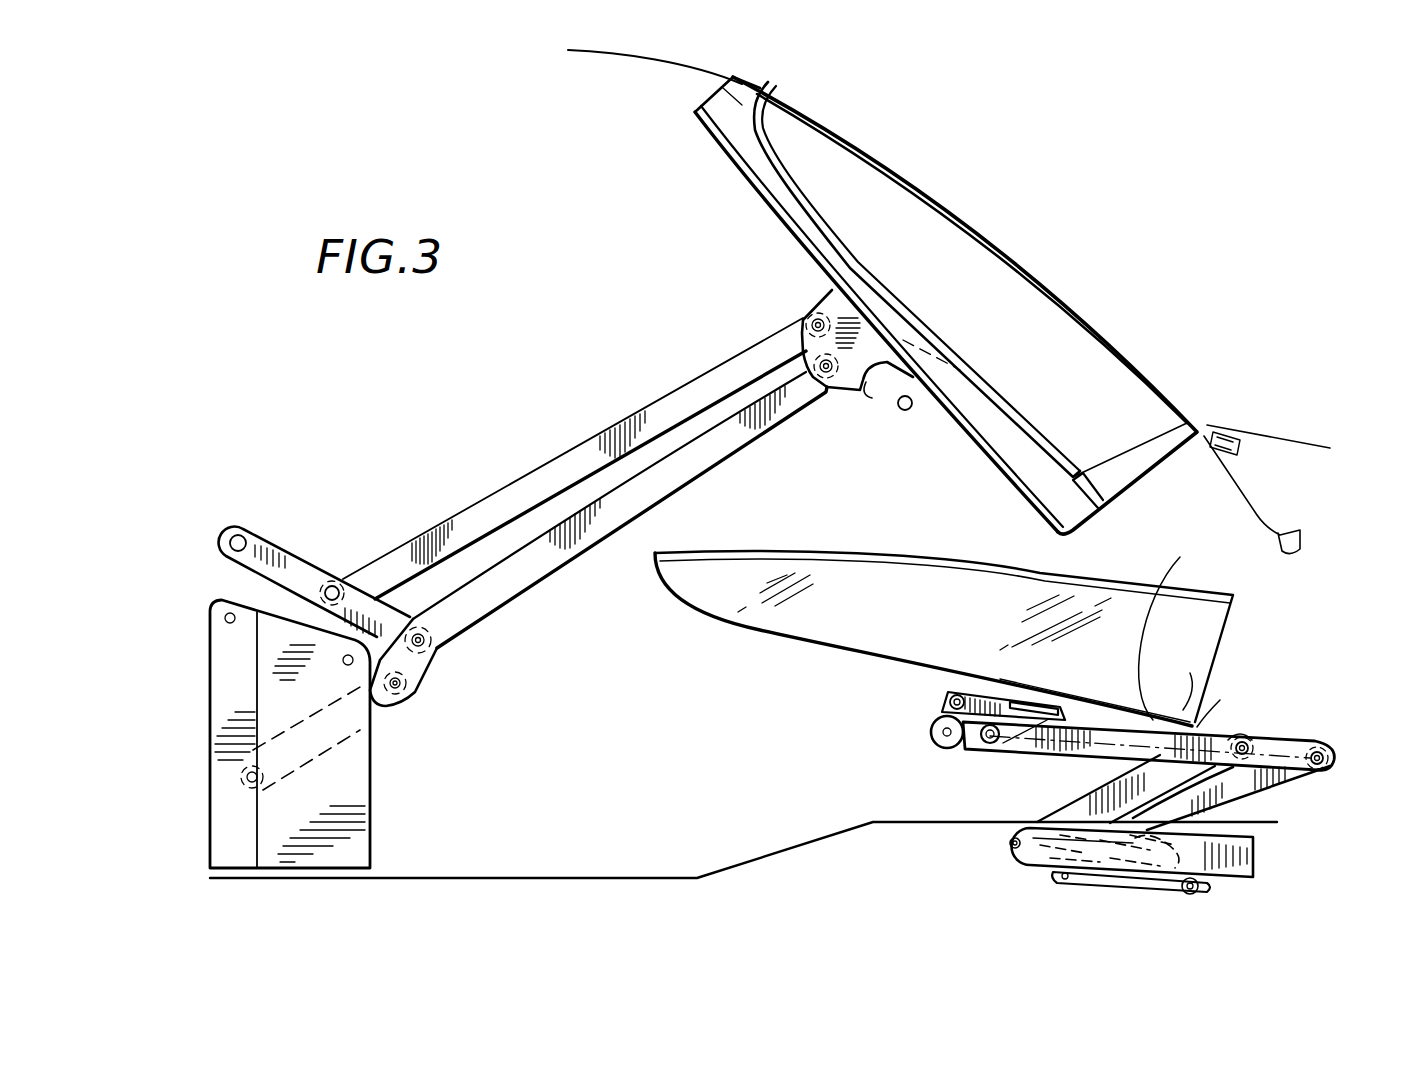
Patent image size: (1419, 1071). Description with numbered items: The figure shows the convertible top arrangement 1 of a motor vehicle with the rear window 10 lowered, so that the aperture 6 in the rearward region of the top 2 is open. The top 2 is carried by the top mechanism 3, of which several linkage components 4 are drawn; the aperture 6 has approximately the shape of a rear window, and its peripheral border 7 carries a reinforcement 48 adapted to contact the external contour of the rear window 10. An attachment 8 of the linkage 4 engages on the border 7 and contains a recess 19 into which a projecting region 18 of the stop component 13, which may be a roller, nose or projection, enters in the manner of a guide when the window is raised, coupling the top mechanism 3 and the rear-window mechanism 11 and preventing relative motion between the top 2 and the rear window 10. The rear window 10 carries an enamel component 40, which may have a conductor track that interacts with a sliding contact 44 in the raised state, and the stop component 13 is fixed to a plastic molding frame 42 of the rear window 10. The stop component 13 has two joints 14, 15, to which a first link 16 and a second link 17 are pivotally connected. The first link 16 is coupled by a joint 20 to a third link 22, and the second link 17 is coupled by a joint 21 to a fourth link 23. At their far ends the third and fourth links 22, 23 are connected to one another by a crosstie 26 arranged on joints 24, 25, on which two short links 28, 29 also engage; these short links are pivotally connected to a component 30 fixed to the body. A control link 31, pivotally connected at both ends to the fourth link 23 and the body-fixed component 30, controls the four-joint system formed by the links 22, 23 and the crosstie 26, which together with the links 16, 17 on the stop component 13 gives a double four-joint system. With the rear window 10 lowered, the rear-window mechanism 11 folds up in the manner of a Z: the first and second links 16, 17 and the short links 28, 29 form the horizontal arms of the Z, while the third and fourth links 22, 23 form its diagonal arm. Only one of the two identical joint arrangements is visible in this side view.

The convertible top arrangement 1 is at (1012, 315).
The top 2 is at (648, 52).
The top mechanism 3 is at (455, 492).
The linkage components 4 is at (542, 567).
The aperture 6 is at (1005, 288).
The peripheral border 7 is at (1002, 433).
The attachment 8 is at (833, 305).
The rear window 10 is at (1212, 623).
The rear-window mechanism 11 is at (933, 792).
The stop component 13 is at (995, 700).
The joint 14 is at (995, 745).
The joint 15 is at (948, 705).
The first link 16 is at (1034, 746).
The second link 17 is at (1223, 702).
The projecting region 18 is at (938, 745).
The recess 19 is at (878, 378).
The joint 20 is at (1328, 764).
The joint 21 is at (1250, 742).
The third link 22 is at (1262, 783).
The fourth link 23 is at (1125, 790).
The joint 24 is at (1178, 889).
The joint 25 is at (1008, 838).
The crosstie 26 is at (1147, 893).
The short link 28 is at (1246, 846).
The short link 29 is at (1045, 858).
The component fixed to the body 30 is at (1112, 877).
The control link 31 is at (1087, 885).
The enamel component 40 is at (1169, 680).
The plastic molding frame 42 is at (1172, 628).
The sliding contact 44 is at (1098, 495).
The reinforcement 48 is at (987, 386).